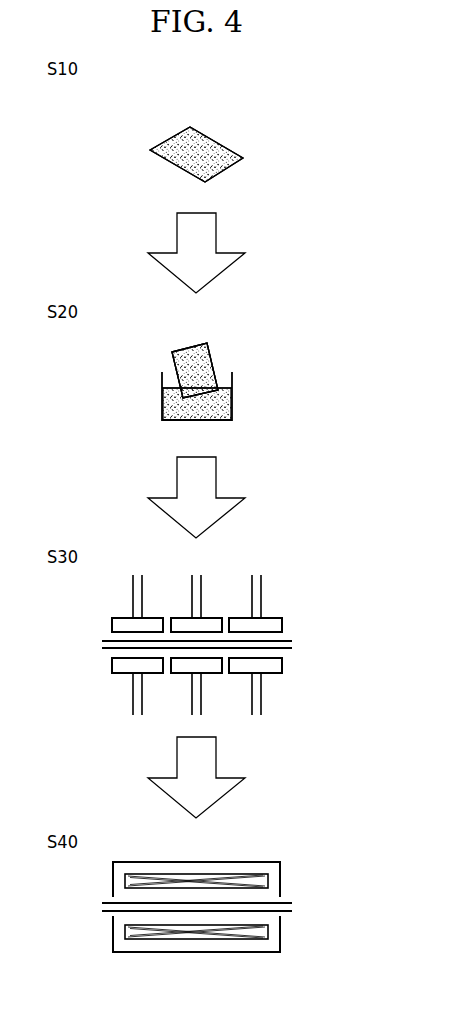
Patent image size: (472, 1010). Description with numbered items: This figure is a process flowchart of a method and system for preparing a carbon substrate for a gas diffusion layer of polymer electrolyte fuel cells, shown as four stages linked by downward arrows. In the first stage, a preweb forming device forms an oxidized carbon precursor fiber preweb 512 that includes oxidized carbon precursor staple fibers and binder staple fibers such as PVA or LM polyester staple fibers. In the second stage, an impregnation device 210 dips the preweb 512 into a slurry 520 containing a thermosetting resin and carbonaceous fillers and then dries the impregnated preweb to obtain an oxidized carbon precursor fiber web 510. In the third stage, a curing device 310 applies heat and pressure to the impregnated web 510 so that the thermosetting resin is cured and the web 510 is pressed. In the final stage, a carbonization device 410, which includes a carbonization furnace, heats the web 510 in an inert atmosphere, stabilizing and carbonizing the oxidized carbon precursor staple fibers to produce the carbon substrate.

The oxidized carbon precursor fiber preweb 512 is at (202, 138).
The impregnation device 210 is at (242, 360).
The slurry 520 is at (225, 403).
The curing device 310 is at (285, 561).
The oxidized carbon precursor fiber web 510 is at (288, 639).
The carbonization device 410 is at (285, 838).